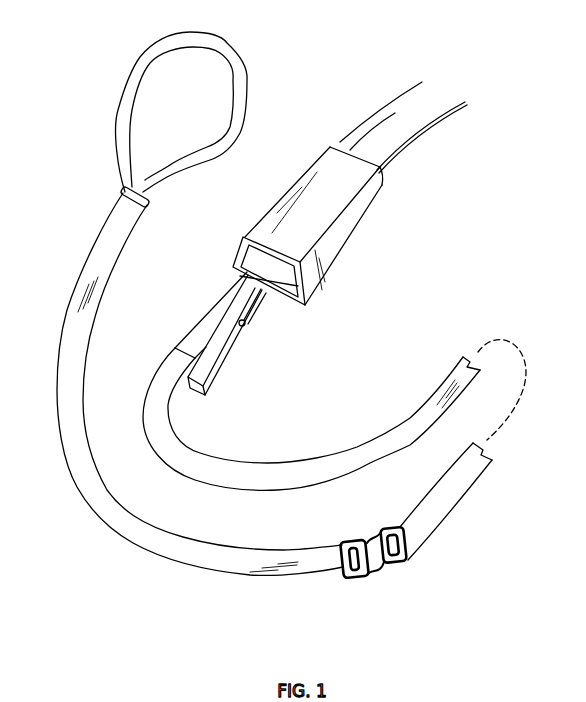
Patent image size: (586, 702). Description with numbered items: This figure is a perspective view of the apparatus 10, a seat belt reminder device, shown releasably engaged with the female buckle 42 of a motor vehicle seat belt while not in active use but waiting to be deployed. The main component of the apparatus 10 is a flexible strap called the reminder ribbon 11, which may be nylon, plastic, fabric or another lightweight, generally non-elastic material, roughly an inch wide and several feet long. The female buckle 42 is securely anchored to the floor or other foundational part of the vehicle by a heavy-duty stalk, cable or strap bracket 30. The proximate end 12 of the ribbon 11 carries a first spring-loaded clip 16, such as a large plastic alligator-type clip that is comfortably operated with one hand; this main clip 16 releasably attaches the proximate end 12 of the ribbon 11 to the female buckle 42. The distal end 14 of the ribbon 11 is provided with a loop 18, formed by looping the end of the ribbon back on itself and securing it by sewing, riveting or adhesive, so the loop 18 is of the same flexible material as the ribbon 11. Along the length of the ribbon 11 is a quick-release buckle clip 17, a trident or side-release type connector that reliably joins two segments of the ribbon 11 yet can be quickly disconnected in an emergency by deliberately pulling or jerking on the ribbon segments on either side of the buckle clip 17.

The apparatus 10 is at (134, 573).
The reminder ribbon 11 is at (412, 425).
The proximate end 12 is at (167, 367).
The distal end 14 is at (108, 247).
The first spring-loaded clip 16 is at (248, 332).
The quick-release buckle clip 17 is at (385, 565).
The loop 18 is at (238, 65).
The strap bracket 30 is at (407, 120).
The female buckle 42 is at (340, 247).